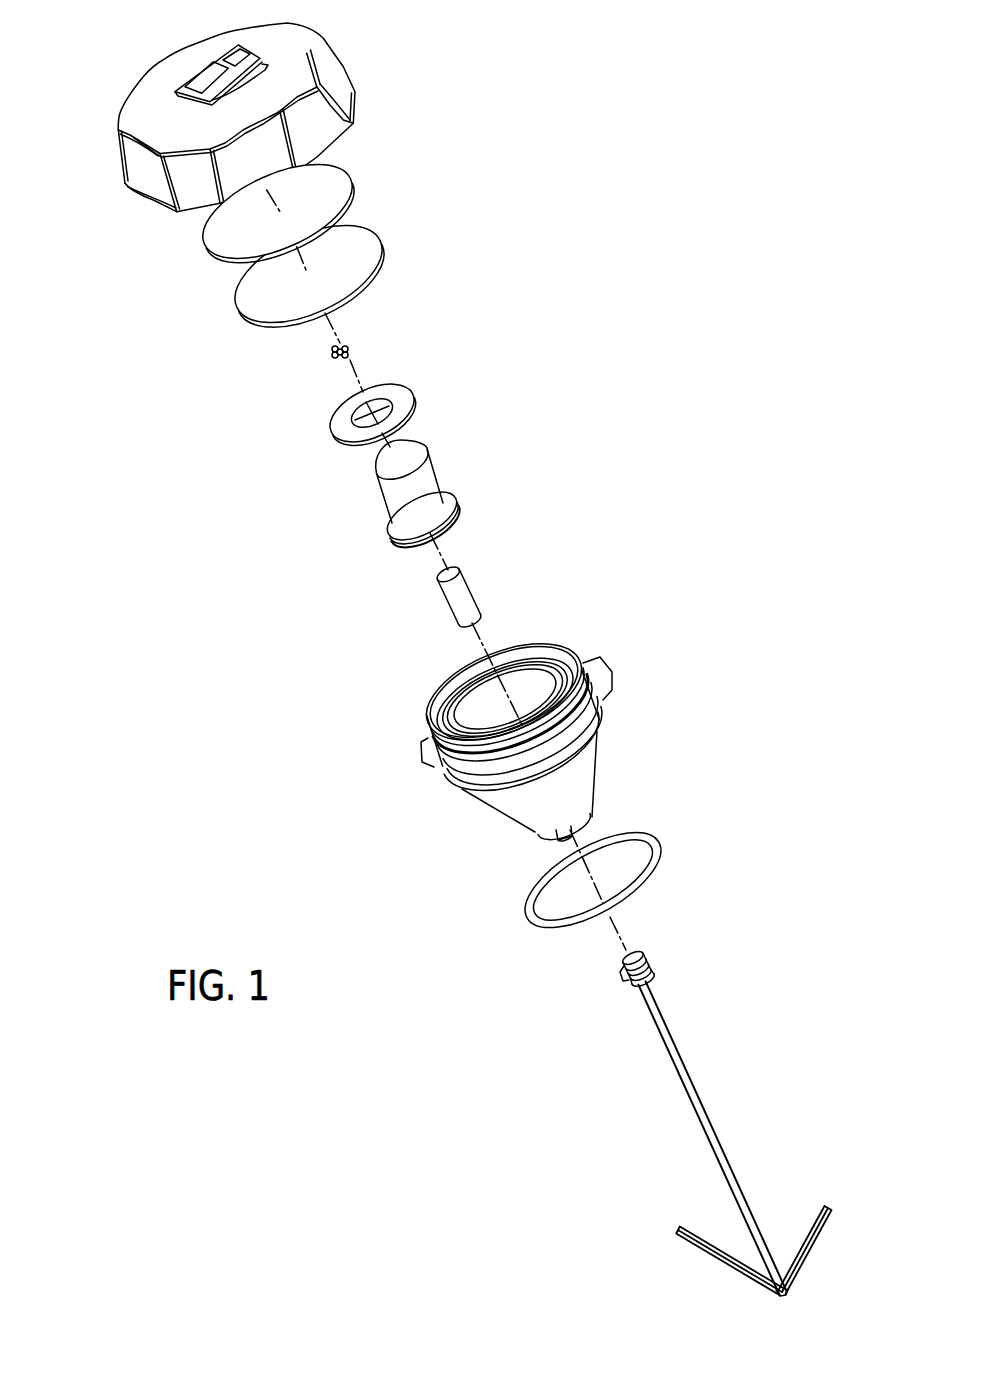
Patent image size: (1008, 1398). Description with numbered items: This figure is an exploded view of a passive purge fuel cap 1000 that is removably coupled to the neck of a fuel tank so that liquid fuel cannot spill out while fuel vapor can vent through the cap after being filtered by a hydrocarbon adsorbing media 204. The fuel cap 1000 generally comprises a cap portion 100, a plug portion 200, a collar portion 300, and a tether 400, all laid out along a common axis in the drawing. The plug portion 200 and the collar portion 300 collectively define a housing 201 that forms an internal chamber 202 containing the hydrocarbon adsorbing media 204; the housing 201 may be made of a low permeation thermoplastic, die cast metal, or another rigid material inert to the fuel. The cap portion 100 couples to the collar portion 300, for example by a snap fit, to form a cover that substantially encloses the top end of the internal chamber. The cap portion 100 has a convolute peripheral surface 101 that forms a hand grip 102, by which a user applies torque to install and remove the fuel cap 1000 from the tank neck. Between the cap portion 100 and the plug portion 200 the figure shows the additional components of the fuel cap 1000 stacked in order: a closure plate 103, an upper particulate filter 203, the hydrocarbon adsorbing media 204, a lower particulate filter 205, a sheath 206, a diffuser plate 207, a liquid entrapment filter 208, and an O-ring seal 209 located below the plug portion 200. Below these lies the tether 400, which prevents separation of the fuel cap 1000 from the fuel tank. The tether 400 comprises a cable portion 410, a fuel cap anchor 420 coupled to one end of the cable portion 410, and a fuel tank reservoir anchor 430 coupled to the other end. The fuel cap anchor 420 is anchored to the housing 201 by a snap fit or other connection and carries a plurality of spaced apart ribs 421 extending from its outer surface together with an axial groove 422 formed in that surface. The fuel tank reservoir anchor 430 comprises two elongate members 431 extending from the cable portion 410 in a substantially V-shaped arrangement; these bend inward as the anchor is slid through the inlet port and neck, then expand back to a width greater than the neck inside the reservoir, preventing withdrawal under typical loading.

The fuel cap 1000 is at (642, 288).
The cap portion 100 is at (360, 60).
The convolute peripheral surface 101 is at (150, 167).
The hand grip 102 is at (318, 110).
The closure plate 103 is at (366, 178).
The upper particulate filter 203 is at (395, 232).
The hydrocarbon adsorbing media 204 is at (358, 343).
The lower particulate filter 205 is at (418, 378).
The sheath 206 is at (440, 449).
The diffuser plate 207 is at (470, 492).
The liquid entrapment filter 208 is at (483, 578).
The plug portion 200 is at (614, 757).
The housing 201 is at (640, 703).
The internal chamber 202 is at (536, 680).
The collar portion 300 is at (437, 793).
The O-ring seal 209 is at (673, 848).
The tether 400 is at (728, 1090).
The cable portion 410 is at (726, 1162).
The fuel cap anchor 420 is at (635, 953).
The ribs 421 is at (652, 972).
The axial groove 422 is at (627, 980).
The fuel tank reservoir anchor 430 is at (786, 1292).
The elongate members 431 is at (697, 1252).